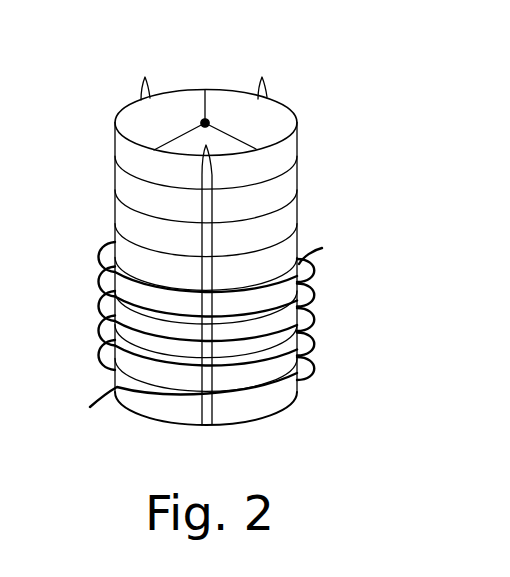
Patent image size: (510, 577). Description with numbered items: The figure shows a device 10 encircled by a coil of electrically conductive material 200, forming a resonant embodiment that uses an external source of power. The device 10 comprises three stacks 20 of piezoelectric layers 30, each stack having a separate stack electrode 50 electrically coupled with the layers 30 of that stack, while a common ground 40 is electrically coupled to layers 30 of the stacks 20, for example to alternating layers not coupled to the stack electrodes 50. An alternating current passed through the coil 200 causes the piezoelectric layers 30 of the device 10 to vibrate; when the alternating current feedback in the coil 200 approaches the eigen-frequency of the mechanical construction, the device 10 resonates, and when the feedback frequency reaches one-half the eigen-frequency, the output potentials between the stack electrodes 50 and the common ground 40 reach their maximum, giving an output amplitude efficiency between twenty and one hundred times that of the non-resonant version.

The device 10 is at (290, 434).
The stacks 20 is at (240, 103).
The piezoelectric layers 30 is at (287, 150).
The common ground 40 is at (209, 123).
The stack electrode 50 is at (146, 78).
The coil of electrically conductive material 200 is at (322, 249).